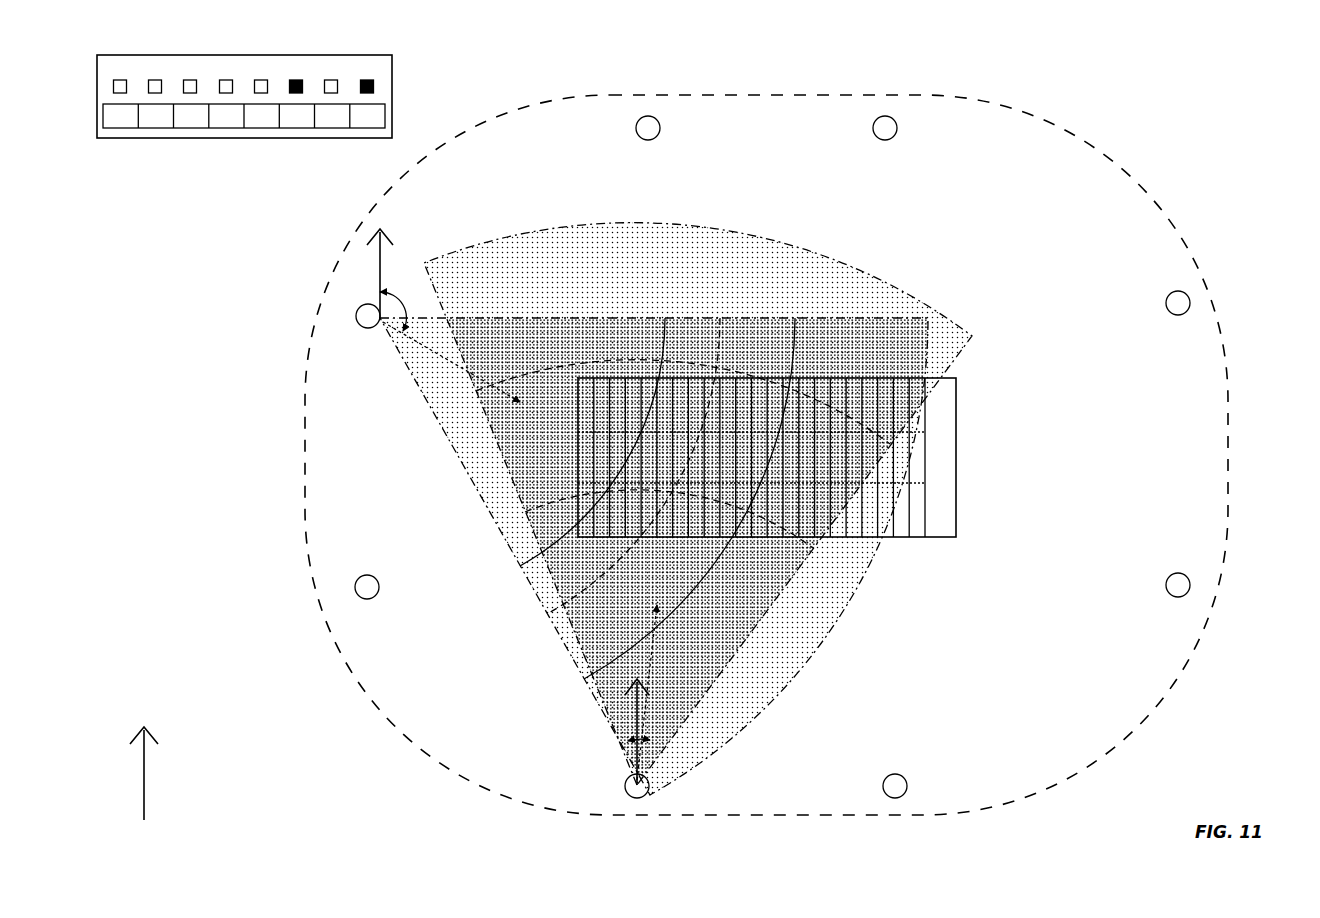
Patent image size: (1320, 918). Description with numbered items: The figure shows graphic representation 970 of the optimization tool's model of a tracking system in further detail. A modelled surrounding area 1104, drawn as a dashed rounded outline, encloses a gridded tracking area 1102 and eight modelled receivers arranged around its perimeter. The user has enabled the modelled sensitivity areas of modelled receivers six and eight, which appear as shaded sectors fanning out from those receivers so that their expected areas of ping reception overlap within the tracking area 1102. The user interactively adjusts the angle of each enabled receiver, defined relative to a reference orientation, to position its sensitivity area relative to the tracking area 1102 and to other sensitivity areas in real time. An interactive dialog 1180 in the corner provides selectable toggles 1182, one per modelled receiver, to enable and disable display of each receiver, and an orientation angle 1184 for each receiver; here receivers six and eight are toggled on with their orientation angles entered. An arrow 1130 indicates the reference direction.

The graphic representation 970 is at (1232, 114).
The surrounding area 1104 is at (1128, 177).
The interactive dialog 1180 is at (153, 170).
The selectable toggles 1182 is at (390, 86).
The orientation angle 1184 is at (390, 116).
The tracking area 1102 is at (958, 397).
The north reference arrow 1130 is at (146, 787).